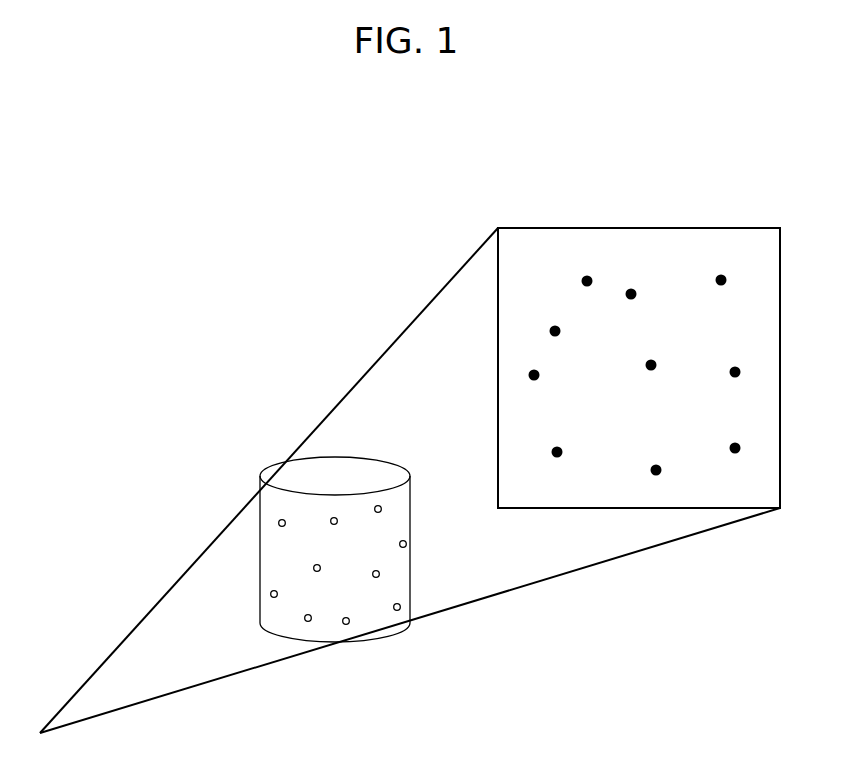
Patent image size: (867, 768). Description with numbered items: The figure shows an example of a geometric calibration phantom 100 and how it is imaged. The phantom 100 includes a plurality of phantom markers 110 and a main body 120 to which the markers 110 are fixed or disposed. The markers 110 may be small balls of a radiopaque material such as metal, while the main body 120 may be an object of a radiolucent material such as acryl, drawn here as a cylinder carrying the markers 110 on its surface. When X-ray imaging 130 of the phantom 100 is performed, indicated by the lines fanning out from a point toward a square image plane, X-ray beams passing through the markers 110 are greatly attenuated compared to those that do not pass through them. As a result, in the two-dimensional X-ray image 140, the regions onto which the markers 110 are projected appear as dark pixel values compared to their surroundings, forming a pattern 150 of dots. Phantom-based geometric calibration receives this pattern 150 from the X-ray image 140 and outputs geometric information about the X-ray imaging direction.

The geometric calibration phantom 100 is at (249, 549).
The phantom markers 110 is at (279, 520).
The main body 120 is at (260, 537).
The X-ray imaging 130 is at (373, 364).
The X-ray image 140 is at (640, 228).
The pattern 150 is at (530, 374).